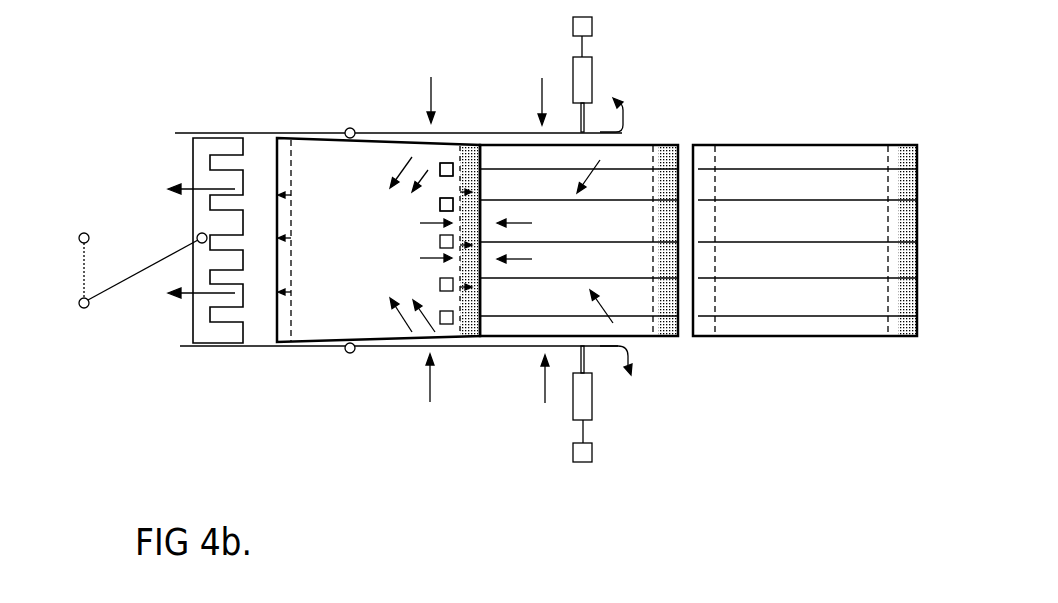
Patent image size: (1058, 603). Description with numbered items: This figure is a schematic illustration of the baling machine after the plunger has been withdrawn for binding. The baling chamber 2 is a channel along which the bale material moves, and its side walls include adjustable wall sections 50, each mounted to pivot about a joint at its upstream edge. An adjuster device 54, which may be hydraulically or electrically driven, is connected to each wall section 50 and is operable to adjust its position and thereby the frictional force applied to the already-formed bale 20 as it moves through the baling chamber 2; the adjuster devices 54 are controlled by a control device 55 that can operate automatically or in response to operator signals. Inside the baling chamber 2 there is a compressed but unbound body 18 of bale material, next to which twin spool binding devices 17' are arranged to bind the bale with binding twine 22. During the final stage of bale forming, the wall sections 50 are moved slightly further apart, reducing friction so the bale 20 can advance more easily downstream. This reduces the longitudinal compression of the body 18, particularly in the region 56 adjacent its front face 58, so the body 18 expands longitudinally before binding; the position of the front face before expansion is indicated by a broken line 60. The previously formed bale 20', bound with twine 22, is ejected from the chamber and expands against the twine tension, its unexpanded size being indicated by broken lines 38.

The baling chamber 2 is at (332, 347).
The twin spool binding devices 17' is at (451, 186).
The body of bale material 18 is at (349, 254).
The bale 20 is at (579, 240).
The previously formed bale 20' is at (805, 240).
The binding twine 22 is at (633, 168).
The broken lines 38 is at (715, 262).
The adjustable wall section 50 is at (510, 132).
The adjuster device 54 is at (592, 78).
The control device 55 is at (592, 25).
The region 56 is at (470, 163).
The front face 58 is at (470, 335).
The broken line 60 is at (460, 183).